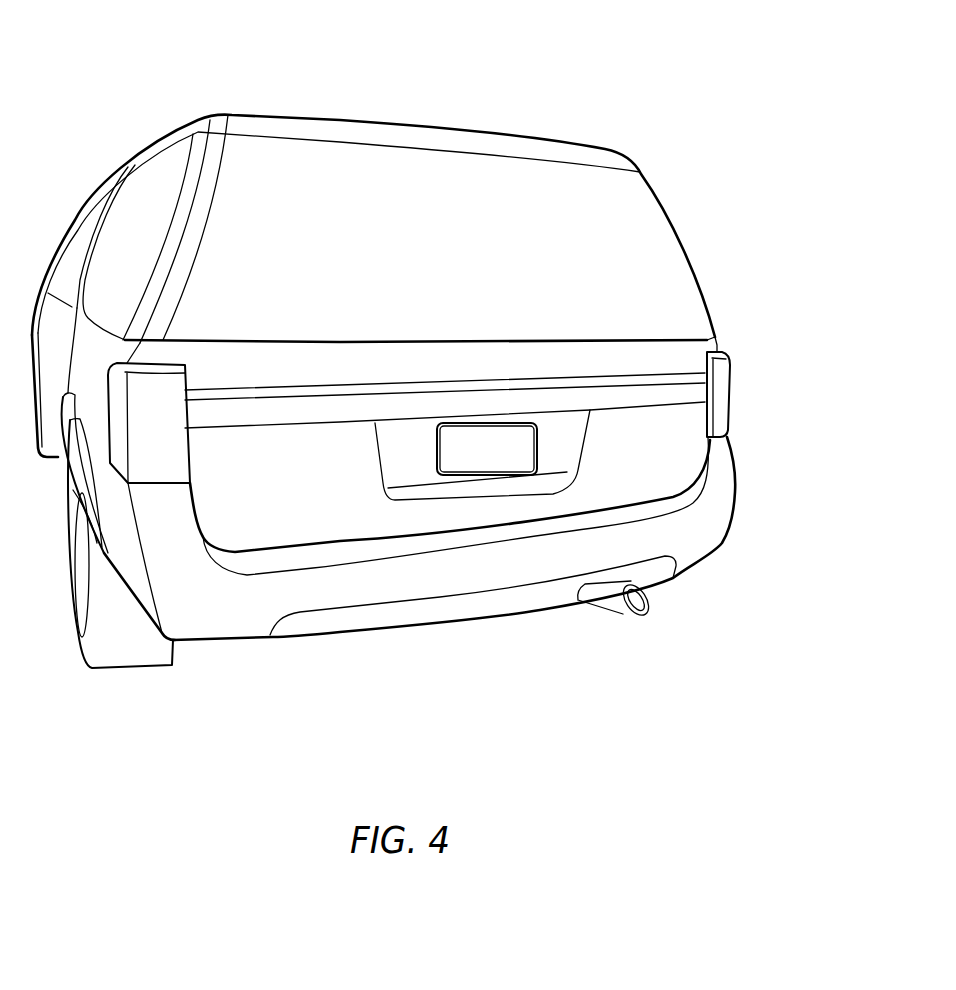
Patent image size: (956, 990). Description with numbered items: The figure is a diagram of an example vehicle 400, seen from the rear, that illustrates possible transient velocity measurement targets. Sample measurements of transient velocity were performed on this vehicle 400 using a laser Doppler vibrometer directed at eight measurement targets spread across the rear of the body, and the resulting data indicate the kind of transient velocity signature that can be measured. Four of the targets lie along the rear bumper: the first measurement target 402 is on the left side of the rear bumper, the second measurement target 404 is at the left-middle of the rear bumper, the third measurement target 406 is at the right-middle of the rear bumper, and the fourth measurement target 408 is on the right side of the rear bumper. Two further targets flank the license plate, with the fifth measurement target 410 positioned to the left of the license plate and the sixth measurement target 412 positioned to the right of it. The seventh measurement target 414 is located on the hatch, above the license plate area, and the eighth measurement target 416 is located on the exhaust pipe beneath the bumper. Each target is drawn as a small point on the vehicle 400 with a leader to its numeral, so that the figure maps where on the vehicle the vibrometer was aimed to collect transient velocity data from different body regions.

The vehicle 400 is at (507, 135).
The first measurement target 402 is at (225, 602).
The second measurement target 404 is at (423, 585).
The third measurement target 406 is at (580, 561).
The fourth measurement target 408 is at (704, 536).
The fifth measurement target 410 is at (424, 453).
The sixth measurement target 412 is at (551, 448).
The seventh measurement target 414 is at (493, 285).
The eighth measurement target 416 is at (594, 600).